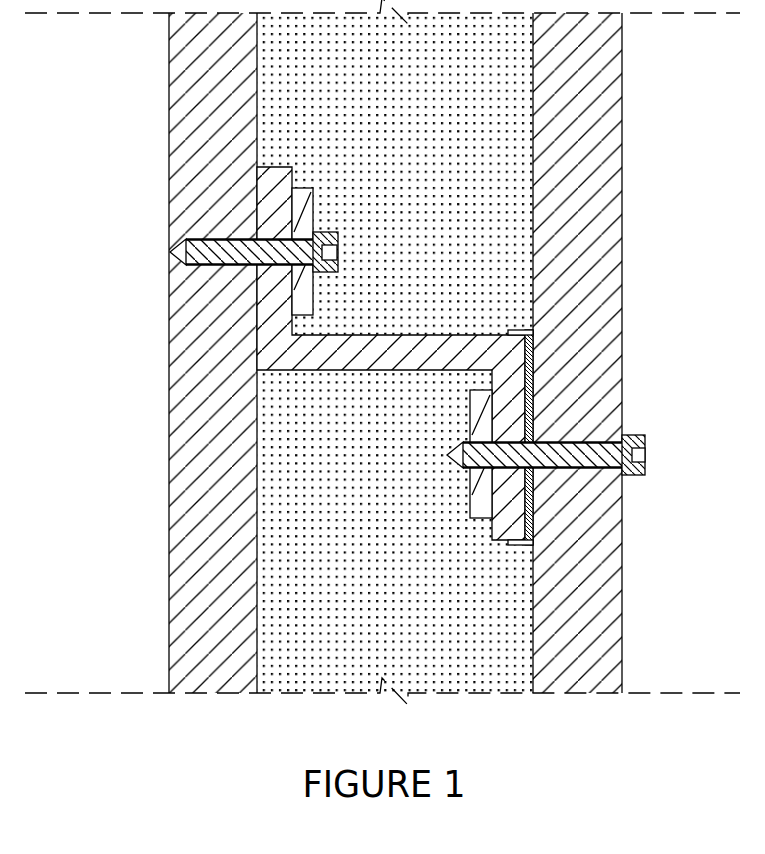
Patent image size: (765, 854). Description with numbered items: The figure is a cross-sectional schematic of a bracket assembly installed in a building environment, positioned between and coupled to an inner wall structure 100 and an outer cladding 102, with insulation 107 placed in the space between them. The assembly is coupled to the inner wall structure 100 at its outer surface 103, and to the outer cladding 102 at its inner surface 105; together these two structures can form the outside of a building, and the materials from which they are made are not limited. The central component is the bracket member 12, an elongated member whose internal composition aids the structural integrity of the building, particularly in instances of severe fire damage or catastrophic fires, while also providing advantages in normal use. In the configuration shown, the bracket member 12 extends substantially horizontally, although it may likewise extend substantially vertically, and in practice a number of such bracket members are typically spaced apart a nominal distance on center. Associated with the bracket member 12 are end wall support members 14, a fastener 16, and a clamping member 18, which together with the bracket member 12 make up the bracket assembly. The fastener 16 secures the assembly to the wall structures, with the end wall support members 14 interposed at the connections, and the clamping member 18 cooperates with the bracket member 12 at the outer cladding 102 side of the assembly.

The bracket member 12 is at (341, 382).
The end wall support member 14 is at (300, 177).
The fastener 16 is at (338, 255).
The clamping member 18 is at (518, 320).
The inner wall structure 100 is at (157, 544).
The outer cladding 102 is at (634, 118).
The outer surface 103 is at (258, 112).
The inner surface 105 is at (533, 112).
The insulation 107 is at (295, 664).